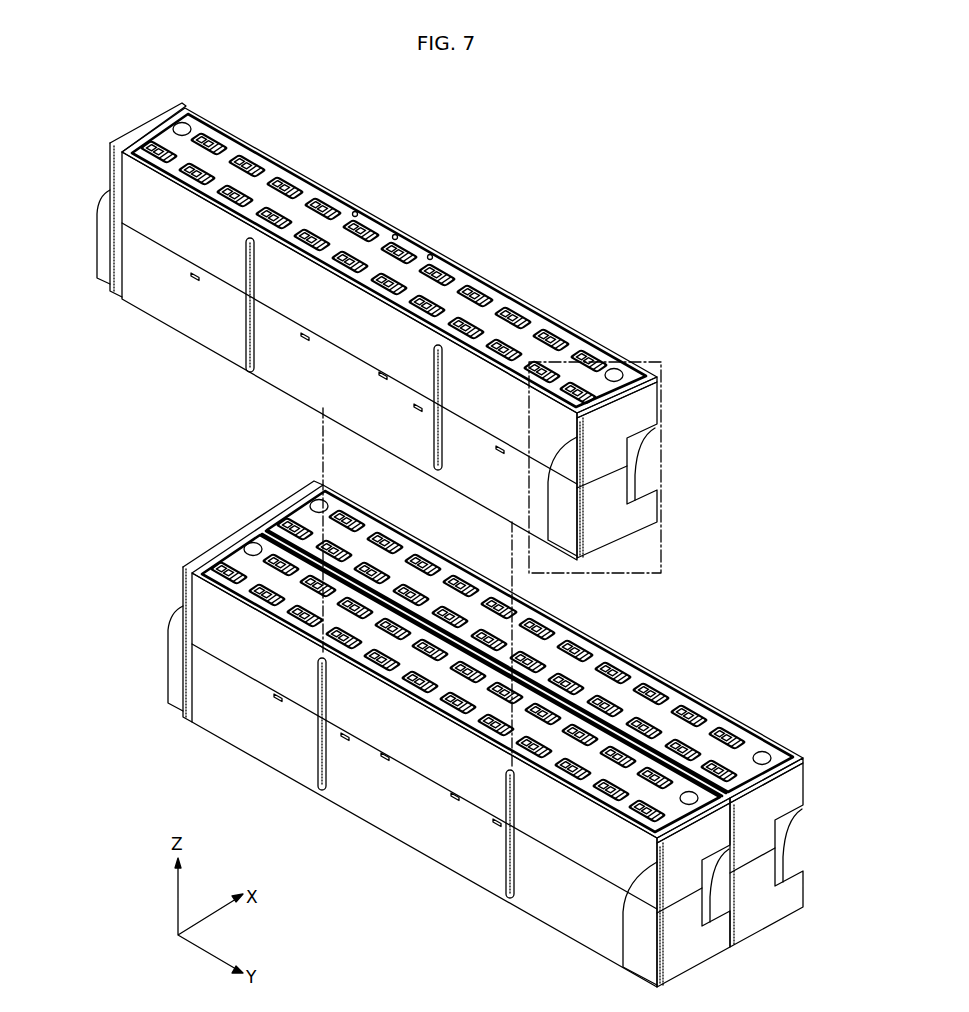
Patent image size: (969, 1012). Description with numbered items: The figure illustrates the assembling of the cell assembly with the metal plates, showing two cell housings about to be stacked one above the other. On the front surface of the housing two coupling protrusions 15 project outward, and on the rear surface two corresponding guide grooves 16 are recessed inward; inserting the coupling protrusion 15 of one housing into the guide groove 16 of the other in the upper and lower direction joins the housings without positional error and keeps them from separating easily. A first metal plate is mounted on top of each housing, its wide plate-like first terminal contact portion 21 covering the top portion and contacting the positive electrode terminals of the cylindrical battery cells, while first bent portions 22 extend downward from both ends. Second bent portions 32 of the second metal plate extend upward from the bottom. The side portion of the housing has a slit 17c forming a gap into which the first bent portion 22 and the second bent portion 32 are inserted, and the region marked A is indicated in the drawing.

The coupling protrusion 15 is at (318, 781).
The guide groove 16 is at (328, 184).
The slit 17c is at (148, 143).
The first terminal contact portion 21 is at (455, 268).
The first bent portion 22 is at (95, 247).
The second bent portion 32 is at (640, 478).
The detail region A is at (650, 362).